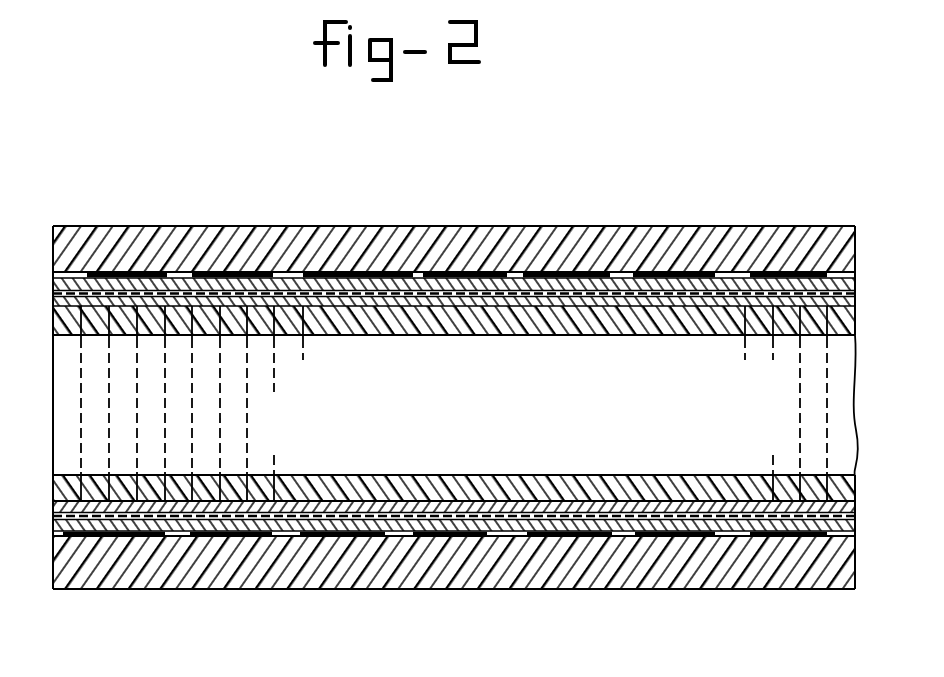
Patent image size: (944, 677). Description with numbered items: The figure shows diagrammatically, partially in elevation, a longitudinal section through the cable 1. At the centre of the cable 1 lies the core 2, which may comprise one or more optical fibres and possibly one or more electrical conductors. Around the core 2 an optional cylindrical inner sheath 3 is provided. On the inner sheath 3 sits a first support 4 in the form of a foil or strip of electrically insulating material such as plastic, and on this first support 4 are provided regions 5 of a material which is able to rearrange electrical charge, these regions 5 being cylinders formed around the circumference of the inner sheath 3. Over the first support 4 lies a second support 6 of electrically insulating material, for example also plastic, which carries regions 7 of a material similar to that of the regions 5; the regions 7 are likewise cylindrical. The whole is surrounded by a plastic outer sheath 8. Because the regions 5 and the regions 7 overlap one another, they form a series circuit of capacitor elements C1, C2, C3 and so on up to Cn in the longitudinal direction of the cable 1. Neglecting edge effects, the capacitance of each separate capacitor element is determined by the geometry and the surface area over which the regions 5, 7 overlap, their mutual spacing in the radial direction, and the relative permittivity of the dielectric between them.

The cable 1 is at (790, 216).
The core 2 is at (400, 452).
The inner sheath 3 is at (458, 496).
The first support 4 is at (492, 508).
The regions 5 is at (625, 291).
The second support 6 is at (550, 530).
The regions 7 is at (442, 272).
The outer sheath 8 is at (577, 575).
The capacitor element C1 is at (95, 411).
The capacitor element C2 is at (148, 411).
The capacitor element C3 is at (203, 411).
The capacitor element Cn is at (812, 411).